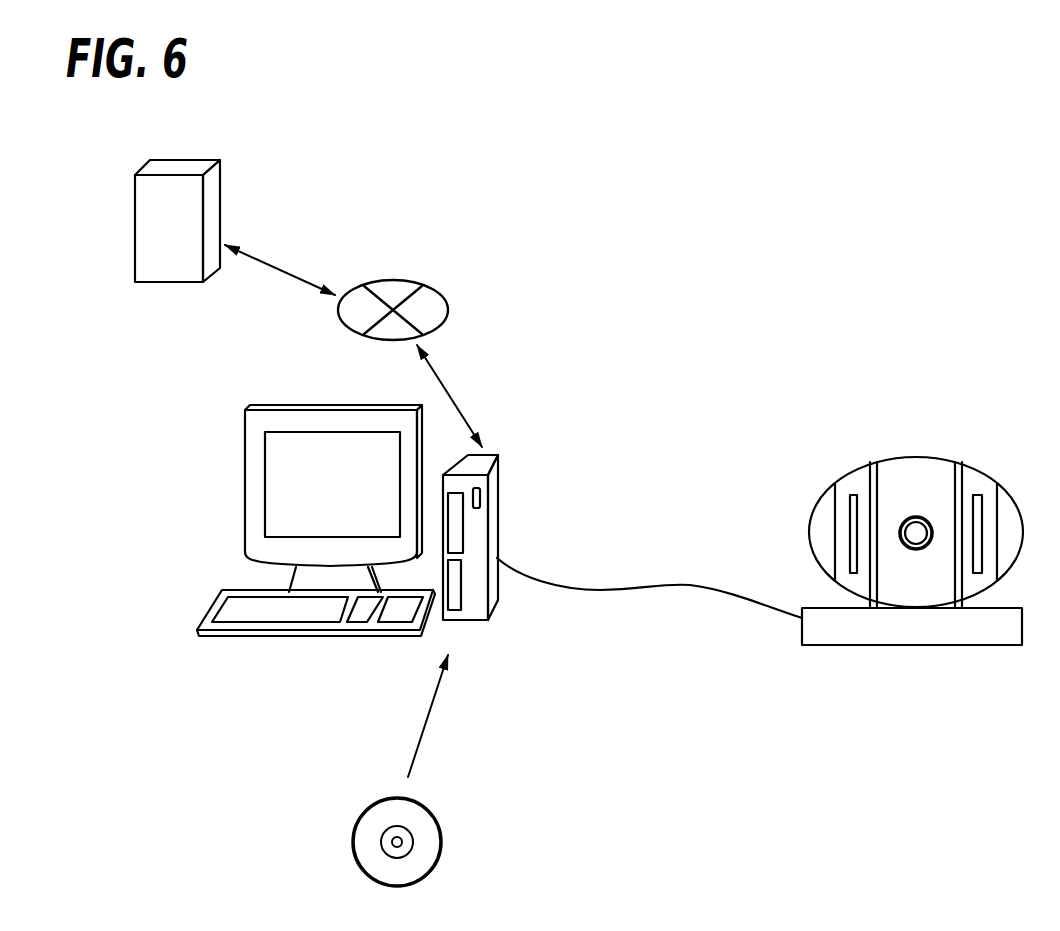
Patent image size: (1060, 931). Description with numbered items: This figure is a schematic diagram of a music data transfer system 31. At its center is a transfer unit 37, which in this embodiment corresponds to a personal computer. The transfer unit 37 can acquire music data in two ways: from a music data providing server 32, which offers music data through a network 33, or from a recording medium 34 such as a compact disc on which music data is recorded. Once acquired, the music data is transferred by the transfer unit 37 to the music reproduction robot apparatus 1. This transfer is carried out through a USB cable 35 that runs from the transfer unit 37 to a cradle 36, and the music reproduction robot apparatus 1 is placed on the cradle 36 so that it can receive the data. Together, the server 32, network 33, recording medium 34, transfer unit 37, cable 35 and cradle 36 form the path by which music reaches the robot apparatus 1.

The music reproduction robot apparatus 1 is at (925, 458).
The music data transfer system 31 is at (771, 307).
The music data providing server 32 is at (222, 208).
The network 33 is at (448, 310).
The recording medium 34 is at (443, 840).
The USB cable 35 is at (620, 588).
The cradle 36 is at (908, 647).
The transfer unit 37 is at (500, 478).